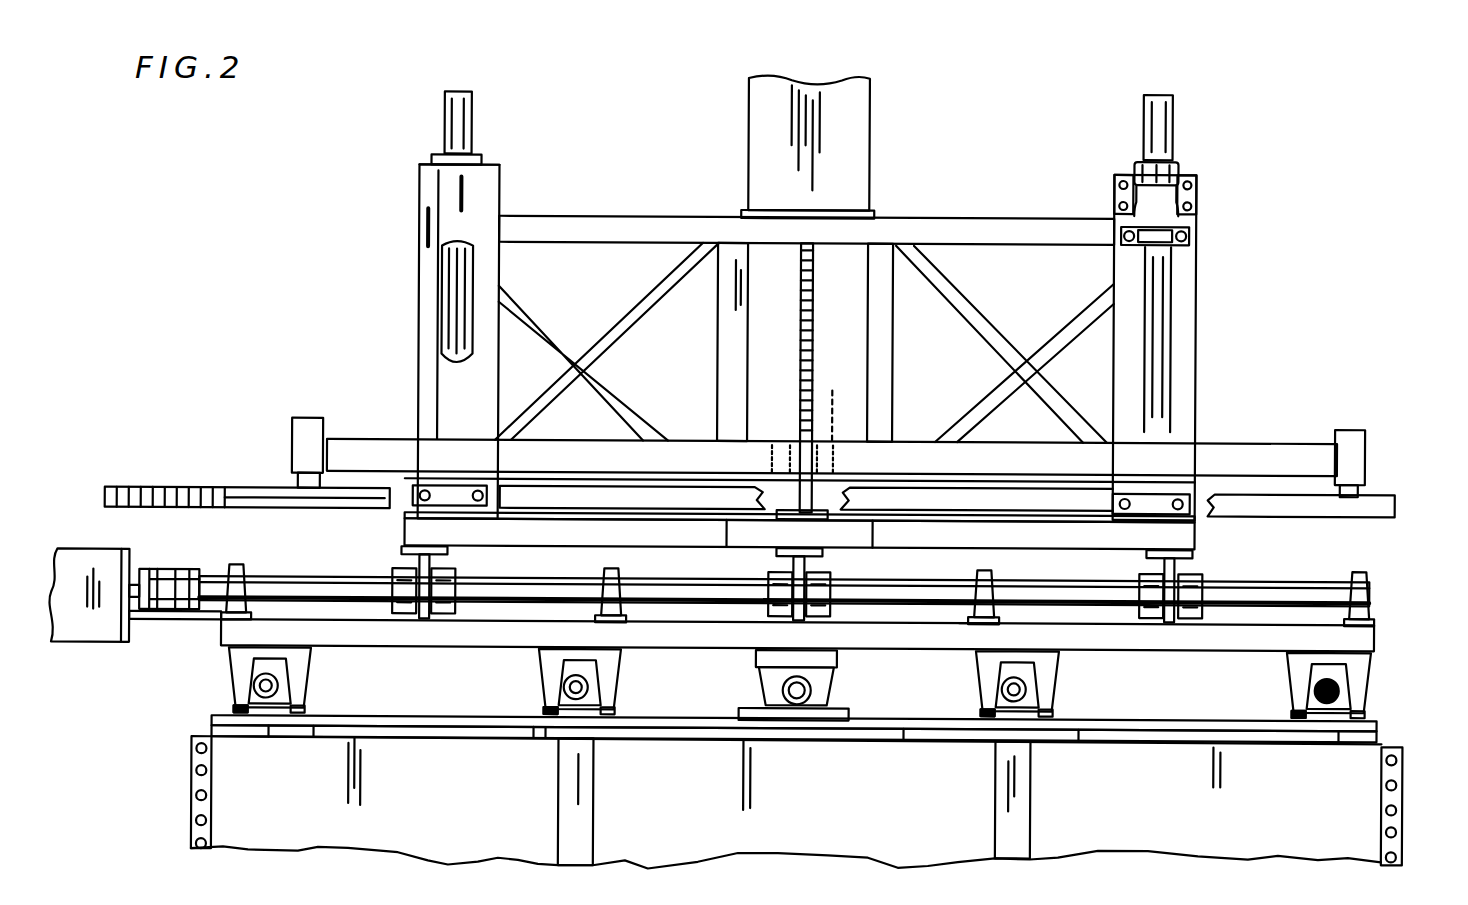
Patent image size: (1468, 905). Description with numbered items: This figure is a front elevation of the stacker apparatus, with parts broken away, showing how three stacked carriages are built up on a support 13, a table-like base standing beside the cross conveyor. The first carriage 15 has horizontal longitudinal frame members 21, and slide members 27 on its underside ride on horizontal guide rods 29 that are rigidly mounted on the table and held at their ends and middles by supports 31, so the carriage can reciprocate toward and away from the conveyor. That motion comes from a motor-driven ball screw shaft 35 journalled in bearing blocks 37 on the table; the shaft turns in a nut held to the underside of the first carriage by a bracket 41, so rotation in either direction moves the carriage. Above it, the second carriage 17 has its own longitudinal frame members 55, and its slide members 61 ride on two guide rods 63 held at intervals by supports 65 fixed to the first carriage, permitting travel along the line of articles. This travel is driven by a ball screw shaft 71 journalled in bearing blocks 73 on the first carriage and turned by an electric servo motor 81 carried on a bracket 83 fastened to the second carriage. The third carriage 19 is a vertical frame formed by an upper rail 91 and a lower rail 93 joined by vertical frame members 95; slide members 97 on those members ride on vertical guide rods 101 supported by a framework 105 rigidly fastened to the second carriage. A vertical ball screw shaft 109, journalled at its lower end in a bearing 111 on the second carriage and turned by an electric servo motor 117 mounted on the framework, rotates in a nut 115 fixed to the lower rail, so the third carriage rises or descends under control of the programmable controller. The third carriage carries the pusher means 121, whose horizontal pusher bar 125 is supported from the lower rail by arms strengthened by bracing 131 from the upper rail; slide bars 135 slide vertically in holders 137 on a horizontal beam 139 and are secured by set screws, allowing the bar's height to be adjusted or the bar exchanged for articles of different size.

The support 13 is at (192, 790).
The first carriage 15 is at (218, 656).
The second carriage 17 is at (1200, 540).
The third carriage 19 is at (502, 188).
The frame members 21 is at (424, 652).
The slide members 27 is at (312, 670).
The guide rods 29 is at (282, 692).
The supports 31 is at (548, 672).
The ball screw shaft 35 is at (835, 675).
The bearing blocks 37 is at (742, 716).
The bracket 41 is at (757, 658).
The frame members 55 is at (406, 540).
The slide members 61 is at (458, 580).
The guide rods 63 is at (312, 581).
The supports 65 is at (238, 567).
The ball screw shaft 71 is at (196, 575).
The bearing blocks 73 is at (975, 624).
The electric servo motor 81 is at (88, 562).
The bracket 83 is at (165, 624).
The upper rail 91 is at (1012, 217).
The lower rail 93 is at (580, 448).
The vertical frame members 95 is at (474, 290).
The slide members 97 is at (434, 158).
The guide rods 101 is at (472, 125).
The framework 105 is at (893, 372).
The ball screw shaft 109 is at (802, 332).
The bearing 111 is at (818, 508).
The nut 115 is at (845, 398).
The electric servo motor 117 is at (870, 125).
The pusher means 121 is at (136, 488).
The pusher bar 125 is at (106, 492).
The bracing 131 is at (418, 362).
The slide bars 135 is at (298, 482).
The holders 137 is at (292, 432).
The horizontal beam 139 is at (1246, 444).